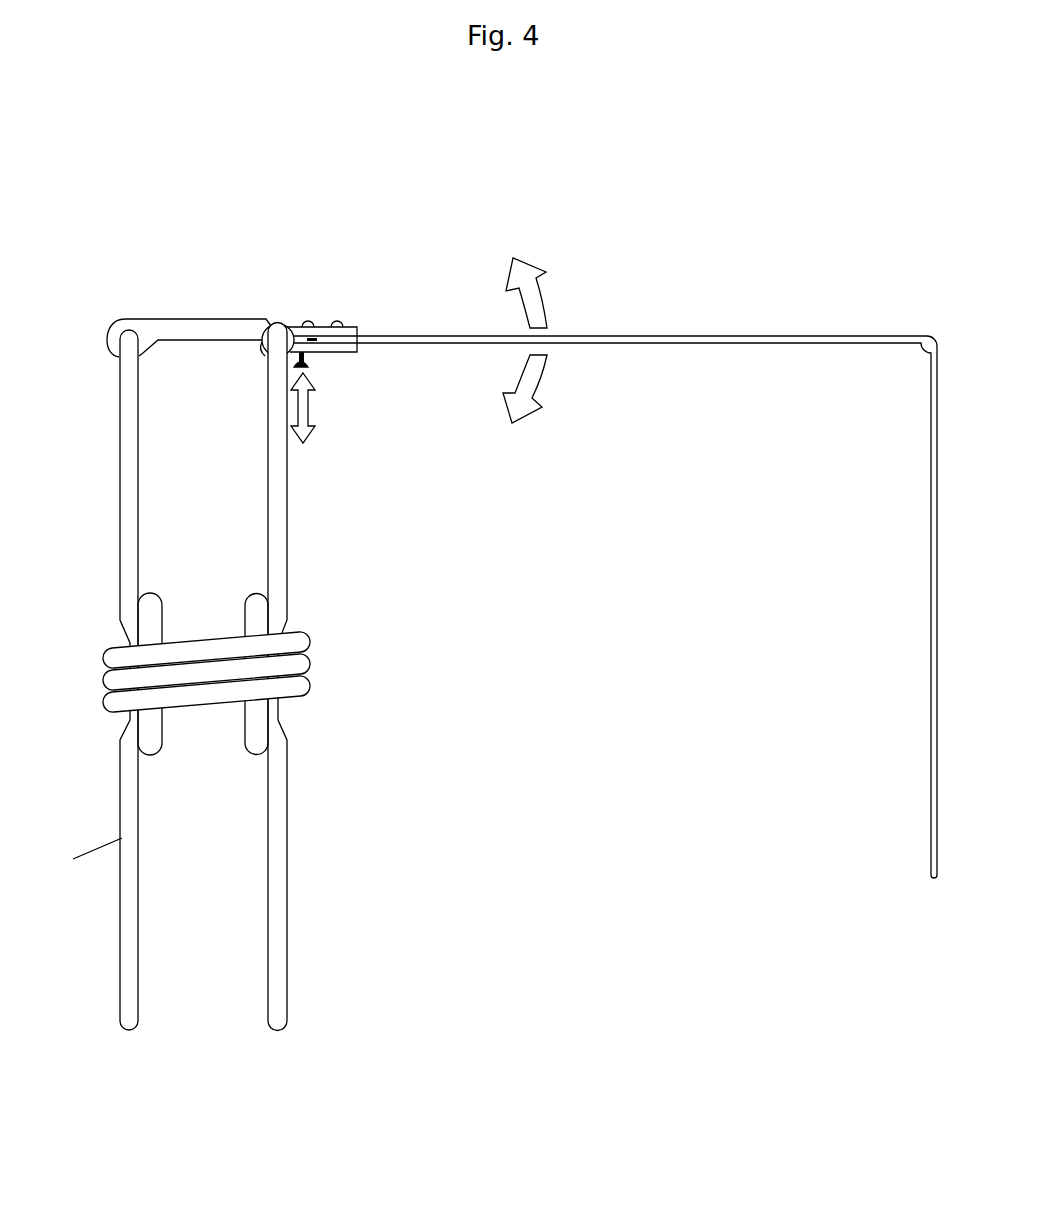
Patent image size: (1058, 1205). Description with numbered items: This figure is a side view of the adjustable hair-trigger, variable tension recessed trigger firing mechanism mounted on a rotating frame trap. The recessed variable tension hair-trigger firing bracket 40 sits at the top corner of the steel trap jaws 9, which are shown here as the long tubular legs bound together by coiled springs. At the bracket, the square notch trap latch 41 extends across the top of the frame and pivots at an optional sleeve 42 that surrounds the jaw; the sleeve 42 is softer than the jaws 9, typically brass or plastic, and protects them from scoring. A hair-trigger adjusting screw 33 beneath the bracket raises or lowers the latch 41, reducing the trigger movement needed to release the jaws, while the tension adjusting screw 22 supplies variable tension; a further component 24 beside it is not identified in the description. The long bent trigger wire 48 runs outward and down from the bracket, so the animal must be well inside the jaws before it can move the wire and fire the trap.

The jaws 9 is at (145, 458).
The tension adjusting screw 22 is at (313, 326).
The rivet 24 is at (338, 326).
The hair-trigger adjusting screw 33 is at (308, 368).
The recessed variable tension hair-trigger firing bracket 40 is at (356, 326).
The square notch trap latch 41 is at (180, 318).
The sleeve 42 is at (266, 338).
The long bent trigger wire 48 is at (636, 335).